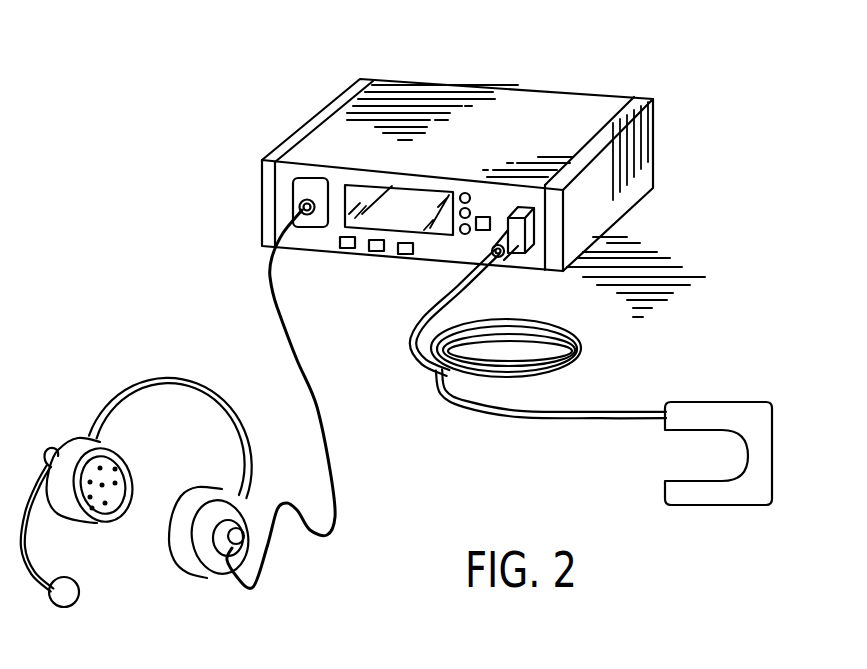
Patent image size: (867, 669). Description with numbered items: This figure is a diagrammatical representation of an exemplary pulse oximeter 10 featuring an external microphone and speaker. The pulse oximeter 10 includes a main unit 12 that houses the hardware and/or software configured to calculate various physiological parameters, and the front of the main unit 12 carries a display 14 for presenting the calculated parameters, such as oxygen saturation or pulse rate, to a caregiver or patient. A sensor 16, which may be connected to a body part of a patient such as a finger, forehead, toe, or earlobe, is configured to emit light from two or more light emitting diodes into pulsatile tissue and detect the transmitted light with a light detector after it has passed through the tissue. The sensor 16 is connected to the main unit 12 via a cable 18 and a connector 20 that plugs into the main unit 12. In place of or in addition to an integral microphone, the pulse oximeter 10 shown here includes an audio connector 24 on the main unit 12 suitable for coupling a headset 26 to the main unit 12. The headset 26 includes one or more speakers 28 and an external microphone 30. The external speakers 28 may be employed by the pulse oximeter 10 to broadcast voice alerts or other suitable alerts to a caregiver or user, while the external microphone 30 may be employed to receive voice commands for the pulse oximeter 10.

The pulse oximeter 10 is at (285, 93).
The main unit 12 is at (538, 90).
The display 14 is at (433, 236).
The sensor 16 is at (761, 407).
The cable 18 is at (447, 397).
The connector 20 is at (531, 231).
The audio connector 24 is at (300, 209).
The headset 26 is at (152, 377).
The speakers 28 is at (190, 574).
The external microphone 30 is at (73, 604).